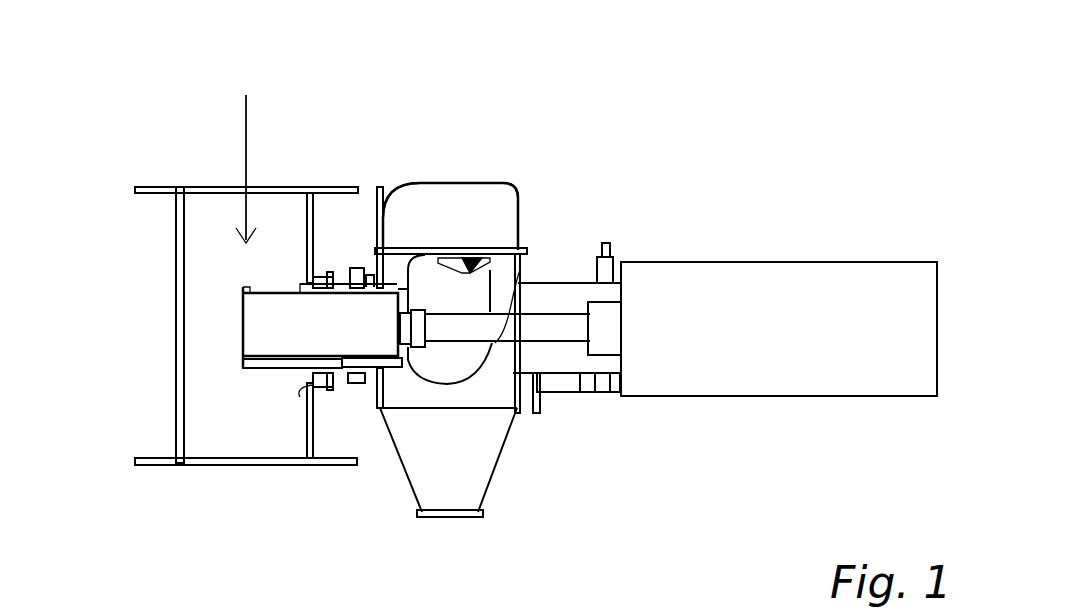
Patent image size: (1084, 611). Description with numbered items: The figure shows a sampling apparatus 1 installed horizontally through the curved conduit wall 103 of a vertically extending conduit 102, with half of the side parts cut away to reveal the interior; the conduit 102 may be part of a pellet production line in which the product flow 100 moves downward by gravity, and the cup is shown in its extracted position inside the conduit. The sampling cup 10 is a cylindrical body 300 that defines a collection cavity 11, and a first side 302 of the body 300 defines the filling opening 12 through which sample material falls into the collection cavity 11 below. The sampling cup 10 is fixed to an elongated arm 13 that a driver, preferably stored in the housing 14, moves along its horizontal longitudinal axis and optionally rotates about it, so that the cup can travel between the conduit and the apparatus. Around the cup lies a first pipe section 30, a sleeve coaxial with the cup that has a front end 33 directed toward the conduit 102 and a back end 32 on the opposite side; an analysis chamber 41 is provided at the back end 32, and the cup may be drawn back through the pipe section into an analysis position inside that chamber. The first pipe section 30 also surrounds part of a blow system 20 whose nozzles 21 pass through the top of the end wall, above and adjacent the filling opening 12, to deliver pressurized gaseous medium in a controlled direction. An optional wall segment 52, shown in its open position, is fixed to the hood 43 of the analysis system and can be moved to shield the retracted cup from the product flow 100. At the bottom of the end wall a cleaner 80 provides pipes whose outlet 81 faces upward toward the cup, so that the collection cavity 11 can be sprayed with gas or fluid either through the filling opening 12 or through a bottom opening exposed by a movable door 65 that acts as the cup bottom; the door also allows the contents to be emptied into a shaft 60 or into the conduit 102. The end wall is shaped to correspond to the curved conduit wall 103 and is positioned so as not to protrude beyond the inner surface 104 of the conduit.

The sampling apparatus 1 is at (872, 112).
The sampling cup 10 is at (250, 332).
The collection cavity 11 is at (285, 262).
The filling opening 12 is at (262, 270).
The elongated arm 13 is at (527, 332).
The housing 14 is at (780, 290).
The blow system 20 is at (330, 240).
The nozzles 21 is at (305, 250).
The first pipe section 30 is at (344, 283).
The first side 302 is at (364, 270).
The back end 32 is at (379, 386).
The front end 33 is at (313, 410).
The analysis chamber 41 is at (502, 276).
The hood 43 is at (486, 203).
The wall segment 52 is at (452, 375).
The shaft 60 is at (423, 482).
The movable door 65 is at (242, 360).
The cleaner 80 is at (283, 430).
The outlet 81 is at (295, 372).
The product flow 100 is at (262, 88).
The conduit 102 is at (182, 172).
The conduit wall 103 is at (174, 212).
The inner surface 104 is at (246, 447).
The body 300 is at (270, 341).